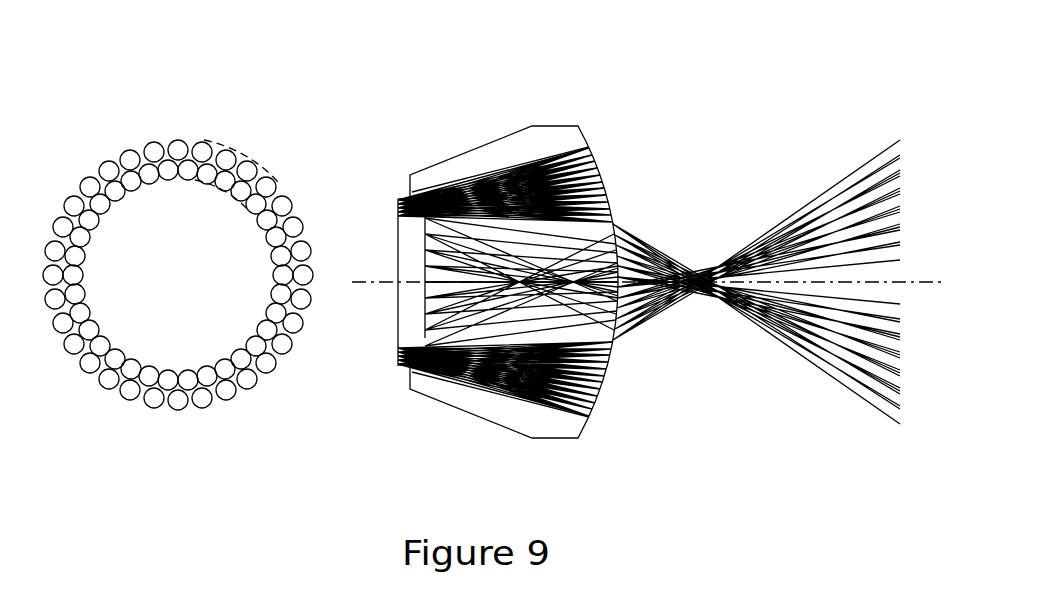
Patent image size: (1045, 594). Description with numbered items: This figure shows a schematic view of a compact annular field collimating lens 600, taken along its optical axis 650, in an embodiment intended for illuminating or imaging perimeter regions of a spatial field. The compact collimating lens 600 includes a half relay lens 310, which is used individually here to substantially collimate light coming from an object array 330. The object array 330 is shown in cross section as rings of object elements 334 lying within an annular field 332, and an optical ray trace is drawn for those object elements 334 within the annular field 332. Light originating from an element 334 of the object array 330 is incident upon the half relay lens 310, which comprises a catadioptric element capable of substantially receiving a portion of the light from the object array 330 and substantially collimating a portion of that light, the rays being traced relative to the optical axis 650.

The compact annular field collimating lens 600 is at (384, 74).
The object array 330 is at (323, 395).
The annular field 332 is at (212, 218).
The object element 334 is at (80, 180).
The optical axis 650 is at (362, 284).
The half relay lens 310 is at (468, 413).